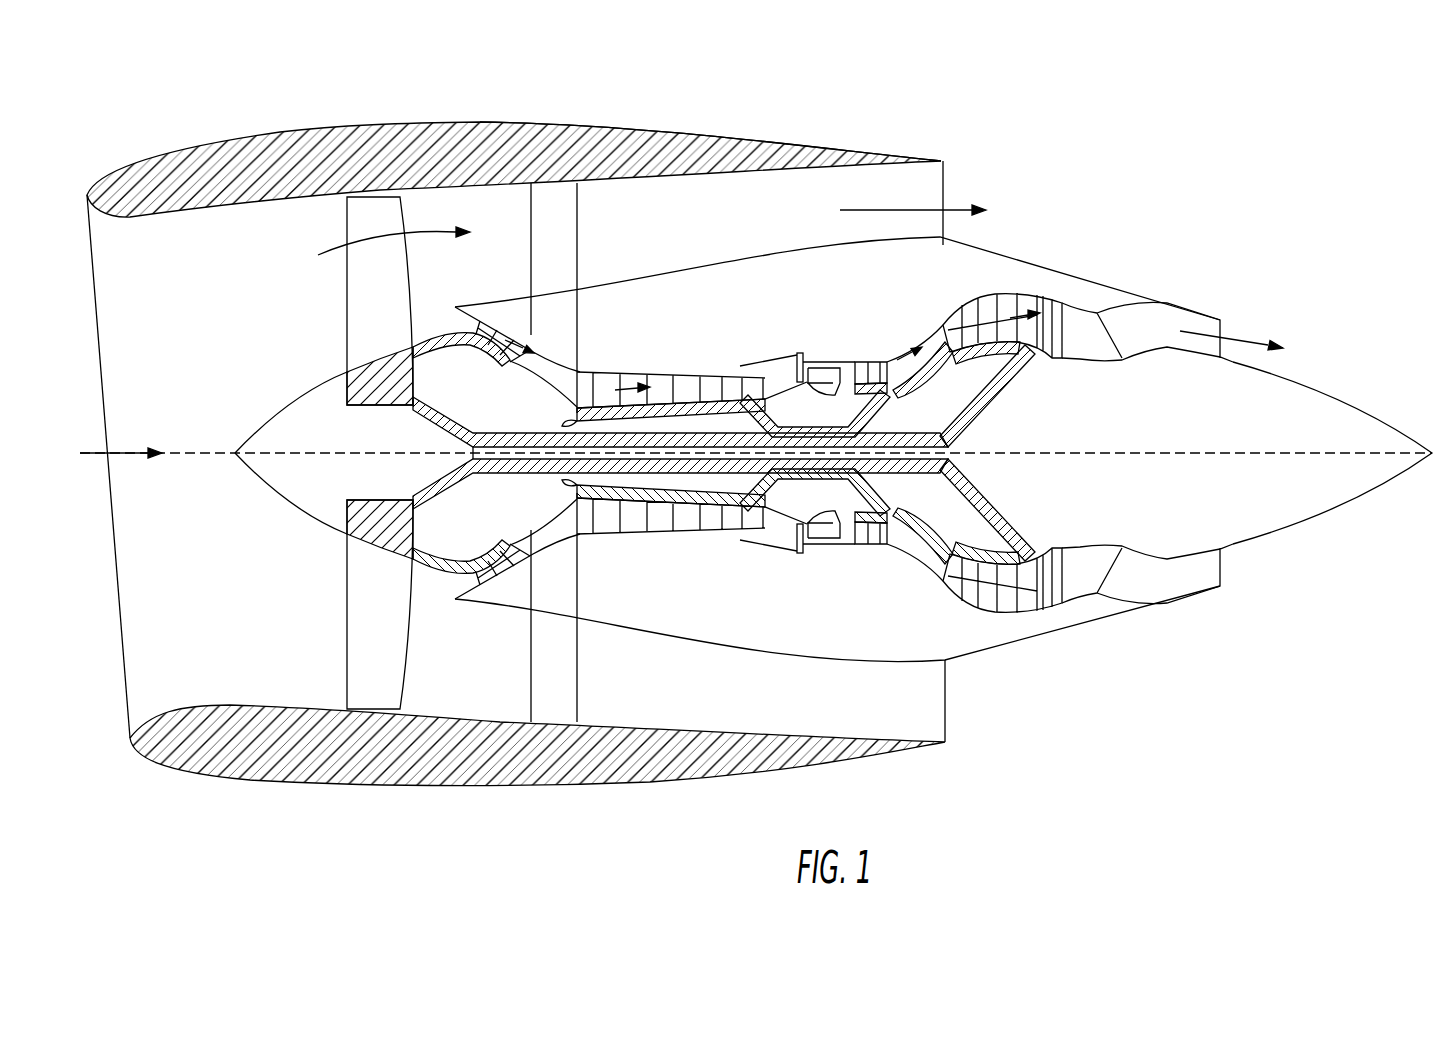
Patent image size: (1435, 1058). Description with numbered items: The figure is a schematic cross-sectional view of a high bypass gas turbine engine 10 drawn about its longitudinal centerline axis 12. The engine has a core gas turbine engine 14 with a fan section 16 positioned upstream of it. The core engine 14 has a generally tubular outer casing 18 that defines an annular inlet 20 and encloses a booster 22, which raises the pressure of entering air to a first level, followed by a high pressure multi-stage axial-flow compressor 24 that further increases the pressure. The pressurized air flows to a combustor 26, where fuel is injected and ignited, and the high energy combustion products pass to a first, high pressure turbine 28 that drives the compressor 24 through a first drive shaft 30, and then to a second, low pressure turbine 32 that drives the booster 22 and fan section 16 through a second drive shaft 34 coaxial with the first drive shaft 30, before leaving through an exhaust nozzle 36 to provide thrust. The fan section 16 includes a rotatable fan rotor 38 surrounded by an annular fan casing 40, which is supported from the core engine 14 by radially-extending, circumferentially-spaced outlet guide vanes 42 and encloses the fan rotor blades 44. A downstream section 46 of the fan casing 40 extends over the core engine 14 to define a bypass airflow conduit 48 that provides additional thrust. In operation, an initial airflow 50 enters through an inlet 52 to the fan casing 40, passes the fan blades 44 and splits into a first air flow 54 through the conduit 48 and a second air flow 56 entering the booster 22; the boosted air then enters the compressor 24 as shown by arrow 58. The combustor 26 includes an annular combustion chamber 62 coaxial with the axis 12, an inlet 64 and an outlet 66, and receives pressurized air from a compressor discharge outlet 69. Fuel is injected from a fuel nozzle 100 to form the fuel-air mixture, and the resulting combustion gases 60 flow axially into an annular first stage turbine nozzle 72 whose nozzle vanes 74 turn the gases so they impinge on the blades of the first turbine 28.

The gas turbine engine 10 is at (1125, 142).
The longitudinal centerline axis 12 is at (1158, 453).
The core gas turbine engine 14 is at (823, 300).
The fan section 16 is at (392, 100).
The outer casing 18 is at (757, 650).
The annular inlet 20 is at (458, 584).
The booster 22 is at (528, 545).
The high pressure compressor 24 is at (612, 527).
The combustor 26 is at (815, 545).
The first turbine 28 is at (915, 545).
The first drive shaft 30 is at (823, 407).
The second turbine 32 is at (1040, 612).
The second drive shaft 34 is at (528, 432).
The exhaust nozzle 36 is at (1222, 320).
The fan rotor 38 is at (413, 410).
The fan casing 40 is at (445, 788).
The outlet guide vanes 42 is at (578, 206).
The fan rotor blades 44 is at (347, 650).
The downstream section 46 is at (790, 144).
The bypass airflow conduit 48 is at (740, 213).
The initial airflow 50 is at (122, 450).
The inlet 52 is at (125, 703).
The first air flow 54 is at (362, 242).
The second air flow 56 is at (443, 313).
The arrow 58 is at (603, 370).
The combustion products 60 is at (870, 367).
The combustion chamber 62 is at (822, 540).
The inlet 64 is at (800, 383).
The outlet 66 is at (843, 367).
The high pressure compressor discharge outlet 69 is at (780, 535).
The first stage turbine nozzle 72 is at (847, 545).
The nozzle vanes 74 is at (830, 520).
The fuel nozzle 100 is at (783, 352).